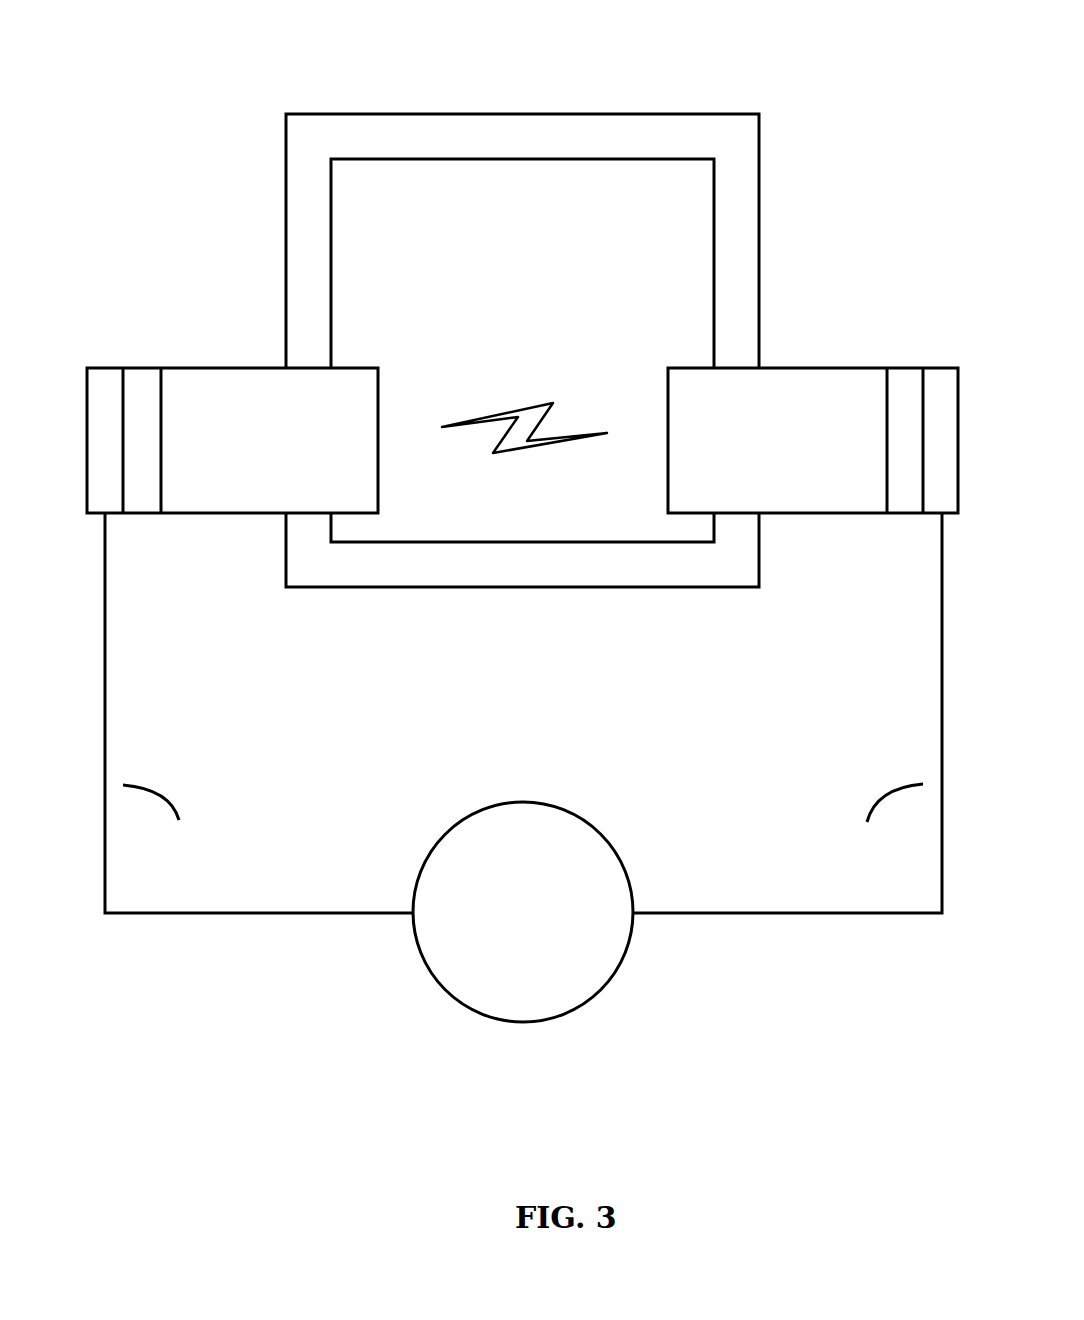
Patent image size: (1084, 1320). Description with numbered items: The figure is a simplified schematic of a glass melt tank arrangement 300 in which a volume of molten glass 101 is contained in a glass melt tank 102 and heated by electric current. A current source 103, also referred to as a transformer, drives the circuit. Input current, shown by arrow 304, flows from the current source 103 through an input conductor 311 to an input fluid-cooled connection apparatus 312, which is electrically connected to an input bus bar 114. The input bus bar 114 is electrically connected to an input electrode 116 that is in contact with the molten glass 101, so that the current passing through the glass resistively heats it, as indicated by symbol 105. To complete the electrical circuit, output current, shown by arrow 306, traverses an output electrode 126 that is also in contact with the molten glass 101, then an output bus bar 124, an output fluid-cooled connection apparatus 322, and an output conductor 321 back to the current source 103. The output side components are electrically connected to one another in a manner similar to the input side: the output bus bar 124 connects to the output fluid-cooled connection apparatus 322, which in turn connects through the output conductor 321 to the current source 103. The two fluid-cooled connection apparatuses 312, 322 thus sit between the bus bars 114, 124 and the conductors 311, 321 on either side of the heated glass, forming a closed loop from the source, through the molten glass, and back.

The glass melt tank arrangement 300 is at (205, 141).
The glass melt tank 102 is at (522, 335).
The molten glass 101 is at (543, 233).
The symbol 105 is at (524, 413).
The output electrode 126 is at (232, 425).
The input electrode 116 is at (814, 425).
The output fluid-cooled connection apparatus 322 is at (124, 425).
The input fluid-cooled connection apparatus 312 is at (924, 425).
The output bus bar 124 is at (259, 713).
The input bus bar 114 is at (787, 713).
The arrow 306 is at (61, 700).
The arrow 304 is at (810, 950).
The output conductor 321 is at (160, 820).
The input conductor 311 is at (887, 819).
The current source 103 is at (523, 944).